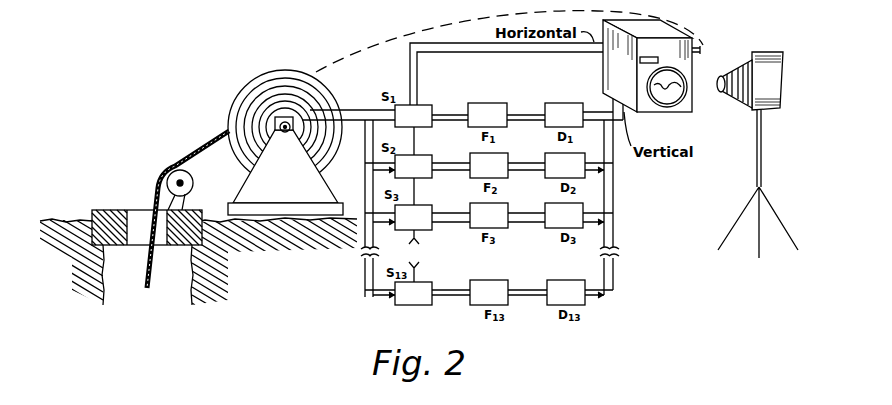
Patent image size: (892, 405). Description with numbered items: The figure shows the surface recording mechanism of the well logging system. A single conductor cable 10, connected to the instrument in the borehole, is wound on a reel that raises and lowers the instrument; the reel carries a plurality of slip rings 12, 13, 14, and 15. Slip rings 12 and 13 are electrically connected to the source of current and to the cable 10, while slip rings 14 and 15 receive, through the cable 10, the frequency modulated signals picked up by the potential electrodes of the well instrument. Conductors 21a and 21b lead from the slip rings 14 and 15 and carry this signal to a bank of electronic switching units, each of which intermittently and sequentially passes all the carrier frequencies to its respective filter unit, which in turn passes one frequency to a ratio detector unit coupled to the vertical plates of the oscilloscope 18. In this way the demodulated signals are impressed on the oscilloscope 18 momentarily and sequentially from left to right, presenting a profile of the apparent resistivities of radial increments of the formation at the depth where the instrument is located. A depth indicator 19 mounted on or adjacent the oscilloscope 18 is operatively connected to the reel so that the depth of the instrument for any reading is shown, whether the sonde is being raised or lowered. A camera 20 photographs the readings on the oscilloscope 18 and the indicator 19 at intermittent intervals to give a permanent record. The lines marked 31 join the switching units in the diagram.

The cable 10 is at (166, 167).
The slip ring 12 is at (297, 82).
The slip ring 13 is at (283, 82).
The slip ring 14 is at (263, 100).
The slip ring 15 is at (261, 124).
The oscilloscope 18 is at (668, 112).
The depth indicator 19 is at (659, 60).
The camera 20 is at (763, 52).
The conductor 21a is at (349, 108).
The conductor 21b is at (356, 124).
The connecting lines 31 is at (414, 145).